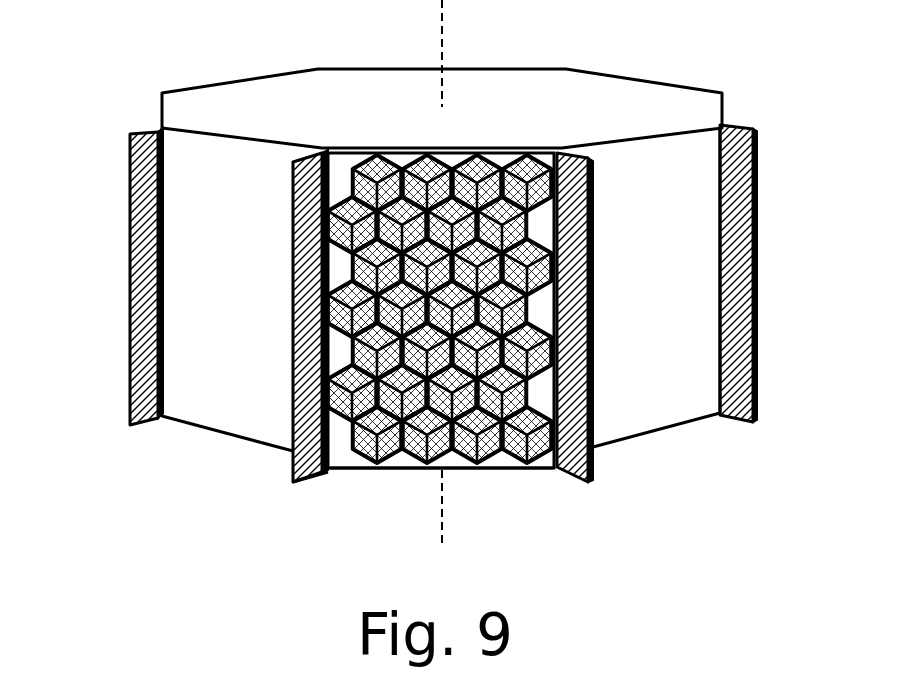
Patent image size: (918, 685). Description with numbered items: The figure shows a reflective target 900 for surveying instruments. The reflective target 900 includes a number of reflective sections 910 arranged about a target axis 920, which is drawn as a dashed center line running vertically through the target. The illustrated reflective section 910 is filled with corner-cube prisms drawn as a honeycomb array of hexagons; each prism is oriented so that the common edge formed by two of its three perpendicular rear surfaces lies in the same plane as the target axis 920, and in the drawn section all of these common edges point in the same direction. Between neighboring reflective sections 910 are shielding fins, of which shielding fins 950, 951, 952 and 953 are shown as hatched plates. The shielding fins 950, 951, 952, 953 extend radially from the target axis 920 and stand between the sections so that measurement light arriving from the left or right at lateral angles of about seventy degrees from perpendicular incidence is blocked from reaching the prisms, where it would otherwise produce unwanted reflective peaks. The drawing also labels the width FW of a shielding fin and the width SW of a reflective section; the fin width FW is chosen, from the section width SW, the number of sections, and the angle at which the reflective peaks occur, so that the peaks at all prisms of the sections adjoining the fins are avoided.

The reflective target 900 is at (366, 350).
The reflective sections 910 is at (262, 138).
The target axis 920 is at (438, 42).
The shielding fin 950 is at (128, 158).
The shielding fin 951 is at (290, 213).
The shielding fin 952 is at (590, 190).
The shielding fin 953 is at (758, 192).
The width of the shielding fins FW is at (293, 482).
The width of the reflective sections SW is at (330, 471).